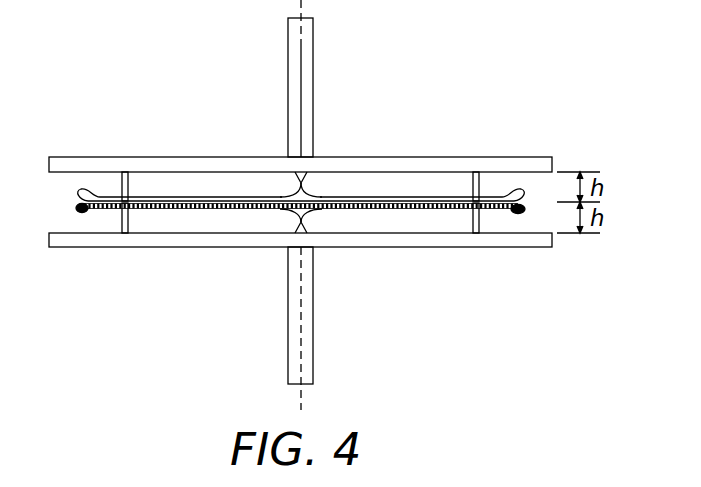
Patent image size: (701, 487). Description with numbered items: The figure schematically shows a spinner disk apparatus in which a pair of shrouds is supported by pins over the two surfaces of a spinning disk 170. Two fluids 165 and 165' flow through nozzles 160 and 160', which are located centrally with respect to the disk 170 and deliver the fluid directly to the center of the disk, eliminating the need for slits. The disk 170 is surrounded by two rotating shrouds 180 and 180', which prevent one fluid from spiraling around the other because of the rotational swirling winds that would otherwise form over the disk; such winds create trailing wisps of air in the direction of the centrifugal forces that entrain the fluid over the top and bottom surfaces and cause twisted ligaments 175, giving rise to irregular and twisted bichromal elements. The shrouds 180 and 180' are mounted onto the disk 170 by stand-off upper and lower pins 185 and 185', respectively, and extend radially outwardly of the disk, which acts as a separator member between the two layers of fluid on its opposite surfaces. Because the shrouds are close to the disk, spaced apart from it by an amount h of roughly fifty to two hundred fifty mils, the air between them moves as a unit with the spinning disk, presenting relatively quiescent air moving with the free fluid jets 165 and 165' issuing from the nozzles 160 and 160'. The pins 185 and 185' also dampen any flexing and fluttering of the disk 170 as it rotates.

The nozzle 160 is at (331, 87).
The fluid 165 is at (338, 78).
The disk 170 is at (382, 202).
The twisted ligaments 175 is at (78, 209).
The rotating shroud 180 is at (300, 151).
The rotating shroud 180' is at (300, 253).
The upper pin 185 is at (300, 186).
The lower pin 185' is at (300, 218).
The nozzle 160' is at (329, 315).
The fluid 165' is at (336, 328).